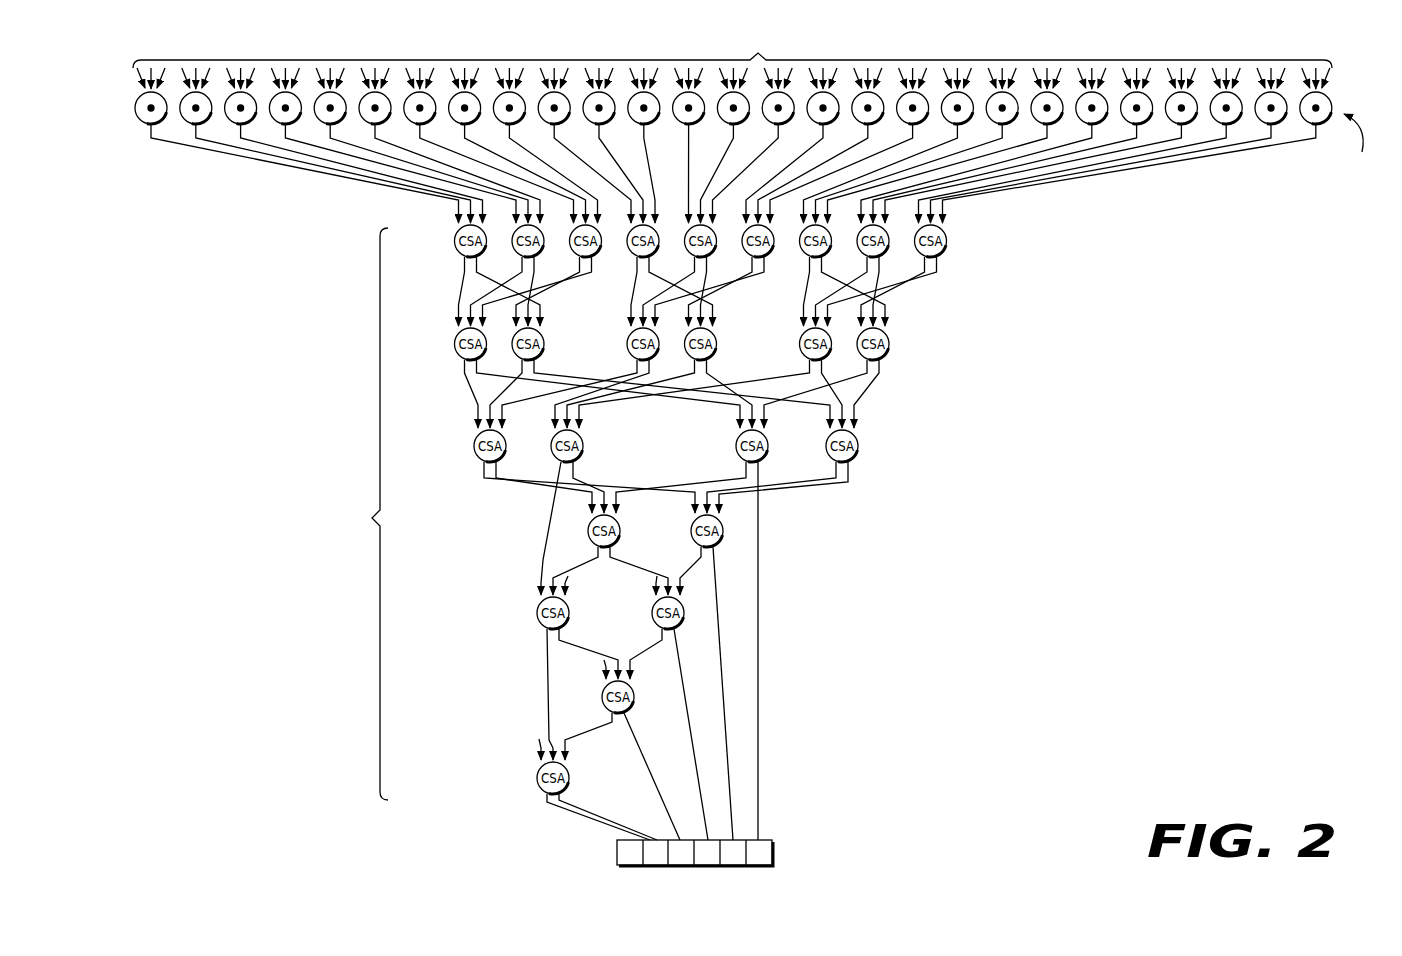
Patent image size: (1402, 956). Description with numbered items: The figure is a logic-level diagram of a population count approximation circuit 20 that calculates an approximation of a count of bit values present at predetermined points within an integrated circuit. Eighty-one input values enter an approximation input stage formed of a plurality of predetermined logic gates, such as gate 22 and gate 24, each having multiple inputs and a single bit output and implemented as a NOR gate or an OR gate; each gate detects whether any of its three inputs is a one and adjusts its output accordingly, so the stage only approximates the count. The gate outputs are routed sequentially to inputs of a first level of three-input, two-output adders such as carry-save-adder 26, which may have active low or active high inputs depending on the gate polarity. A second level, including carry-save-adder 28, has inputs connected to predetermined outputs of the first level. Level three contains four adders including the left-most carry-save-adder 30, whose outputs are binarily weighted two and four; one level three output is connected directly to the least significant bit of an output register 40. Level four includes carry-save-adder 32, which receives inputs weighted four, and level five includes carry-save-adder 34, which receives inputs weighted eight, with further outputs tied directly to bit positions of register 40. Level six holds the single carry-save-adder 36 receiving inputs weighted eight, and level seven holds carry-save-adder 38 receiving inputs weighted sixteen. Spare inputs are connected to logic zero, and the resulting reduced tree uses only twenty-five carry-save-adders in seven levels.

The population count approximation circuit 20 is at (1268, 776).
The gate 22 is at (147, 127).
The gate 24 is at (192, 127).
The carry-save-adder 26 is at (455, 241).
The carry-save-adder 28 is at (455, 344).
The carry-save-adder 30 is at (474, 446).
The carry-save-adder 32 is at (589, 536).
The carry-save-adder 34 is at (537, 613).
The carry-save-adder 36 is at (602, 697).
The carry-save-adder 38 is at (537, 778).
The output register 40 is at (780, 848).